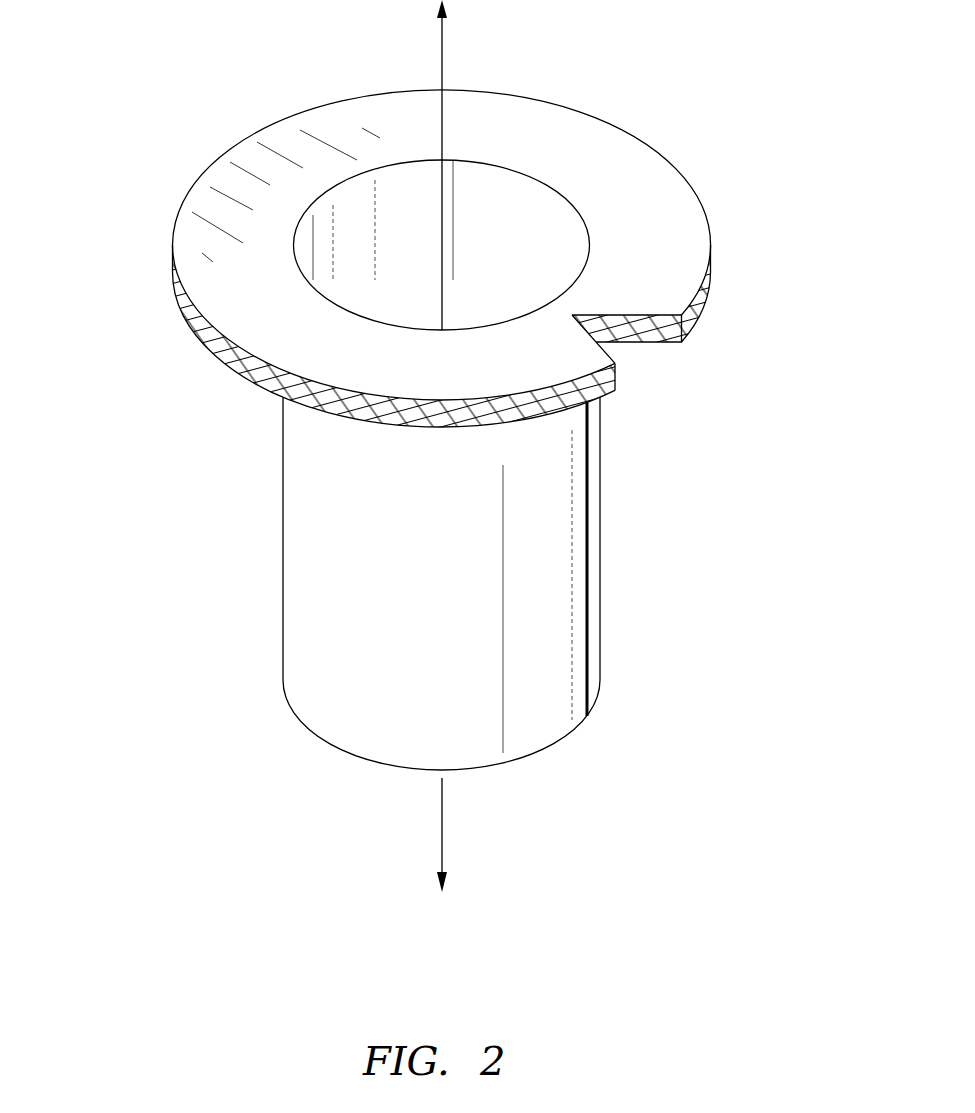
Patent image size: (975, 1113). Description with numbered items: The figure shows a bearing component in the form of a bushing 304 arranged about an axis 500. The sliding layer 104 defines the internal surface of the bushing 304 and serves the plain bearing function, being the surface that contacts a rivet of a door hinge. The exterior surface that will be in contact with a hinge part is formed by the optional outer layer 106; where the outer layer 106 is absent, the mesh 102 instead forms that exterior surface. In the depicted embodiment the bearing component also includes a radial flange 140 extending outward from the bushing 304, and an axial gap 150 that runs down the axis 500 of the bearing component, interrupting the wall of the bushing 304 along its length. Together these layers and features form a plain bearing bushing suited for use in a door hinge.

The bushing 304 is at (416, 400).
The mesh 102 is at (263, 383).
The sliding layer 104 is at (658, 185).
The radial flange 140 is at (700, 312).
The outer layer 106 is at (552, 717).
The axial gap 150 is at (592, 478).
The axis 500 is at (448, 56).